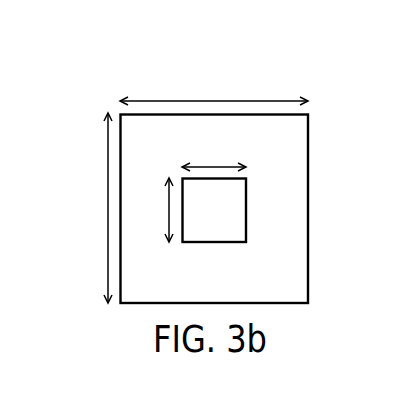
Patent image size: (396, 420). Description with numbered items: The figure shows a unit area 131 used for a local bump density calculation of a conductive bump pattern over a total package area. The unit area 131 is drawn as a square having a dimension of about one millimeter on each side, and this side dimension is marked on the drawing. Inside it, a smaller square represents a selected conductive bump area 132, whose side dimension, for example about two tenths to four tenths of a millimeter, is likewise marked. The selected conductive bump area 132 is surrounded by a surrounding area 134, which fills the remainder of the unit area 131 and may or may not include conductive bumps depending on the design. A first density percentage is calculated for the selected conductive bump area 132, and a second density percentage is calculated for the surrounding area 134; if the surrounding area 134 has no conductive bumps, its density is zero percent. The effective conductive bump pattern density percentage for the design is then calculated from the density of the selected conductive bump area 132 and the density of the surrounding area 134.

The unit area 131 is at (77, 83).
The selected conductive bump area 132 is at (238, 231).
The surrounding area 134 is at (307, 166).